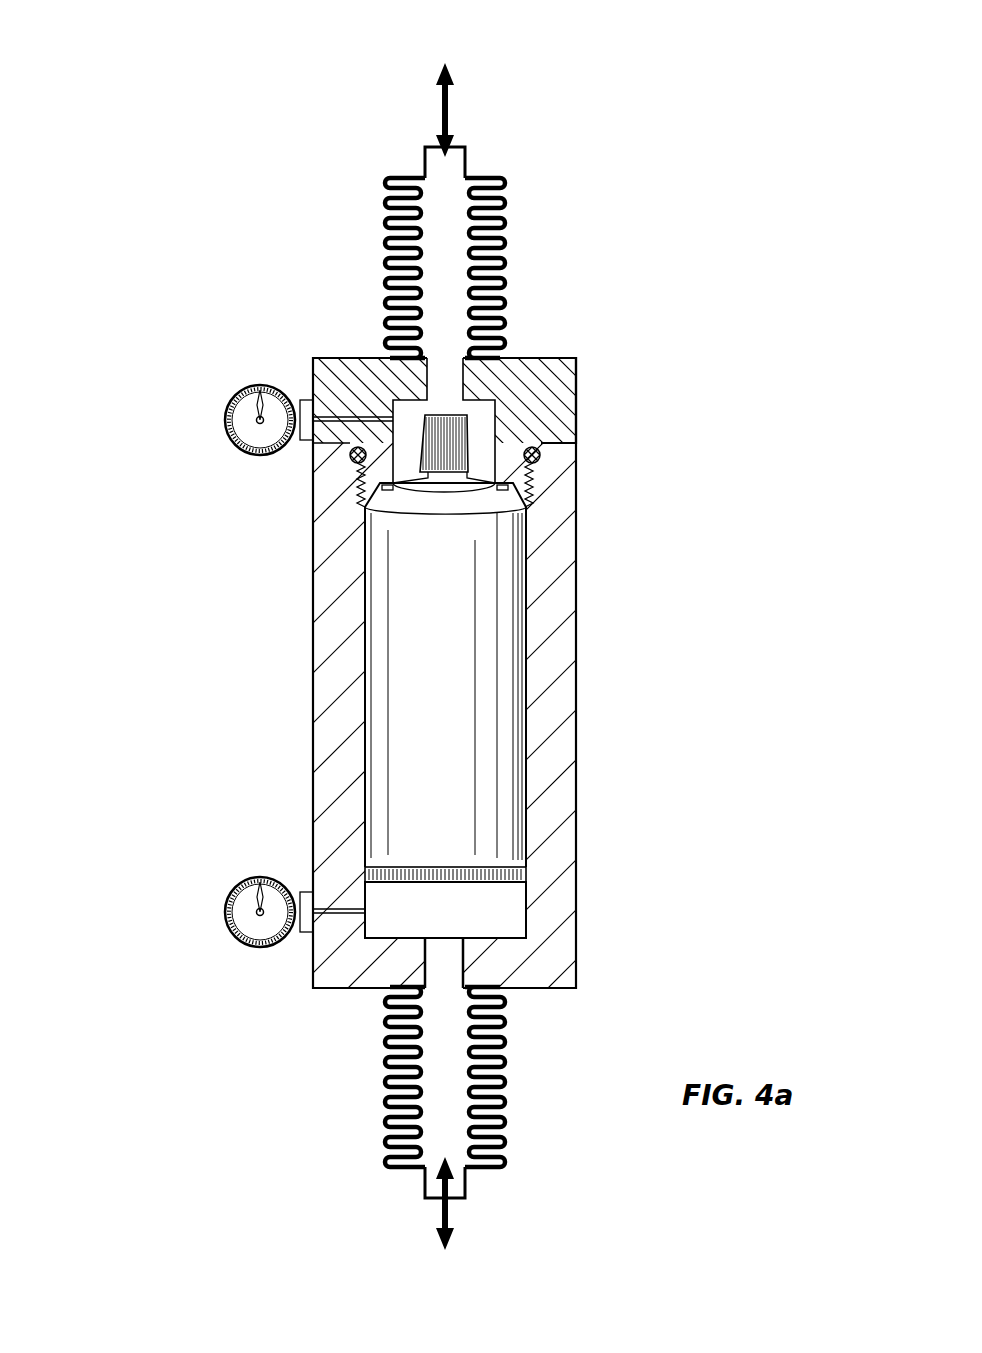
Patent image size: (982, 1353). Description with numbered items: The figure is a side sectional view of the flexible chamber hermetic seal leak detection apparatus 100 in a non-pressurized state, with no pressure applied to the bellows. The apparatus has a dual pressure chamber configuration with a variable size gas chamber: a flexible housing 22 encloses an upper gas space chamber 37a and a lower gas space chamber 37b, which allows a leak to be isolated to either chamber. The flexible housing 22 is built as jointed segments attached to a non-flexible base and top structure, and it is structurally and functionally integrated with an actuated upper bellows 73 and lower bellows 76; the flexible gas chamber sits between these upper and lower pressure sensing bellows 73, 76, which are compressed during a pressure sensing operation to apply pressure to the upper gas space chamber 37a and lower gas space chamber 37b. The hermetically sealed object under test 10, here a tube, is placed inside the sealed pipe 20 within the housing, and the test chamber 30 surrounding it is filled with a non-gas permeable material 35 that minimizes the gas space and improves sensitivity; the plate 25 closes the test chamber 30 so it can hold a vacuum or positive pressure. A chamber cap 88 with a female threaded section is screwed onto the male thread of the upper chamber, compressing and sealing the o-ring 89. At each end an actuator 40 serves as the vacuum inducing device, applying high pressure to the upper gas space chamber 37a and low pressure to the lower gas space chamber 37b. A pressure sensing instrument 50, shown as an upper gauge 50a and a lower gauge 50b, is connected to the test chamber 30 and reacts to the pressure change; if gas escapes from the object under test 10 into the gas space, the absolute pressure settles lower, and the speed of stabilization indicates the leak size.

The flexible chamber hermetic seal leak detection apparatus 100 is at (765, 325).
The hermetically sealed object under test 10 is at (300, 565).
The sealed pipe 20 is at (576, 547).
The flexible housing 22 is at (325, 692).
The plate 25 is at (576, 356).
The chamber cap 88 is at (577, 362).
The seal ring 89 is at (545, 452).
The test chamber 30 is at (370, 747).
The non-gas permeable material 35 is at (380, 638).
The upper gas space chamber 37a is at (482, 422).
The lower gas space chamber 37b is at (510, 907).
The upper bellows 73 is at (507, 215).
The lower bellows 76 is at (507, 1052).
The actuator 40 is at (397, 50).
The pressure sensing instrument 50 is at (230, 387).
The upper pressure gauge 50a is at (226, 407).
The lower pressure gauge 50b is at (226, 903).